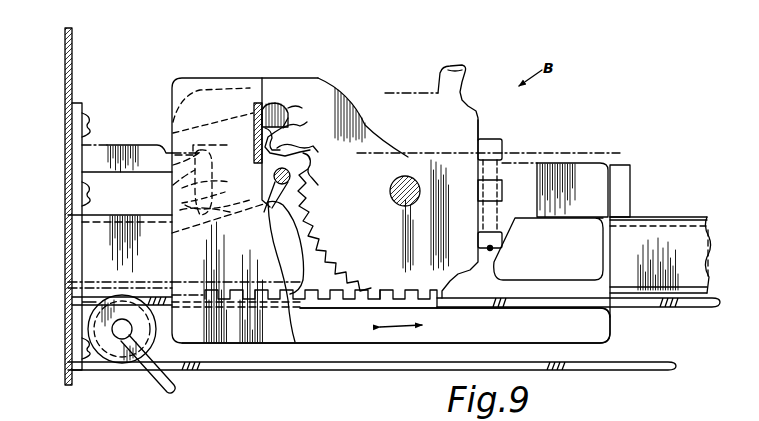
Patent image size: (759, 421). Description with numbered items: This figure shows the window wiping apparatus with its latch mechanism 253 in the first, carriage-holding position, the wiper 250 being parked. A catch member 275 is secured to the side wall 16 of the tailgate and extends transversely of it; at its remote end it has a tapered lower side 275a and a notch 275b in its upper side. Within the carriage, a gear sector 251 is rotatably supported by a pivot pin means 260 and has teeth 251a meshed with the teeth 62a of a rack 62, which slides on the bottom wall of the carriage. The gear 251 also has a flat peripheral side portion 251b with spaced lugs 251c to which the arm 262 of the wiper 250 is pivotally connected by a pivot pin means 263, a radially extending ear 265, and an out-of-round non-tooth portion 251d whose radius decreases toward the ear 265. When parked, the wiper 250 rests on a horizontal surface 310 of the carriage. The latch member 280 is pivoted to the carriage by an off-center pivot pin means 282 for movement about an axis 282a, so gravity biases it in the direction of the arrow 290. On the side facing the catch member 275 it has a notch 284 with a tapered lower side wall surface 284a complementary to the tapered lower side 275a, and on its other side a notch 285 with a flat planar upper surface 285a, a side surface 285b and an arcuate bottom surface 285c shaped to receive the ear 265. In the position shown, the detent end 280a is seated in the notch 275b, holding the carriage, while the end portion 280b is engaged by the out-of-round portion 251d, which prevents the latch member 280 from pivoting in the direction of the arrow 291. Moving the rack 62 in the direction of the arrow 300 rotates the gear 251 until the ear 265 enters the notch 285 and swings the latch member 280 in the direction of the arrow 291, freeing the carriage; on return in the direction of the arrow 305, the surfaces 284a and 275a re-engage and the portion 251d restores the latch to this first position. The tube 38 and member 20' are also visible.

The side wall 16 is at (64, 80).
The catch member 275 is at (100, 158).
The tapered lower side 275a is at (182, 188).
The notch 275b is at (170, 155).
The latch member 280 is at (249, 107).
The detent end 280a is at (173, 122).
The end portion 280b is at (310, 172).
The notch 284 is at (137, 251).
The lower side wall surface 284a is at (182, 203).
The notch 285 is at (283, 128).
The flat planar upper surface 285a is at (294, 108).
The side surface 285b is at (265, 140).
The arcuate bottom surface 285c is at (306, 152).
The arrow 290 is at (245, 184).
The arrow 291 is at (246, 157).
The latch mechanism 253 is at (291, 101).
The pivot pin means 282 is at (284, 233).
The axis 282a is at (272, 206).
The gear sector 251 is at (384, 107).
The teeth 251a is at (345, 272).
The flat peripheral side portion 251b is at (480, 128).
The lugs 251c is at (495, 159).
The non-tooth portion 251d is at (402, 90).
The pivot pin means 260 is at (405, 176).
The pivot pin means 263 is at (494, 249).
The ear 265 is at (458, 72).
The wiper 250 is at (580, 163).
The arm 262 is at (626, 192).
The horizontal surface 310 is at (563, 217).
The tube 38 is at (658, 217).
The frame member 20' is at (722, 243).
The rack 62 is at (438, 300).
The teeth 62a is at (381, 290).
The arrow 305 is at (380, 327).
The arrow 300 is at (422, 325).